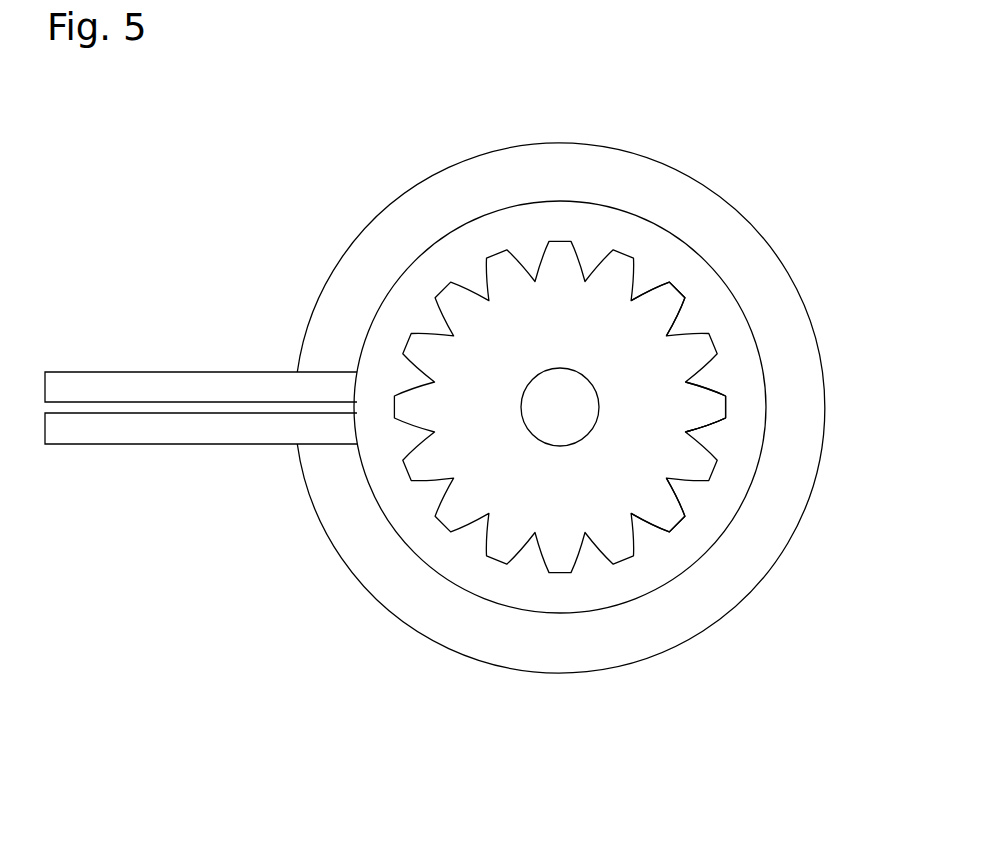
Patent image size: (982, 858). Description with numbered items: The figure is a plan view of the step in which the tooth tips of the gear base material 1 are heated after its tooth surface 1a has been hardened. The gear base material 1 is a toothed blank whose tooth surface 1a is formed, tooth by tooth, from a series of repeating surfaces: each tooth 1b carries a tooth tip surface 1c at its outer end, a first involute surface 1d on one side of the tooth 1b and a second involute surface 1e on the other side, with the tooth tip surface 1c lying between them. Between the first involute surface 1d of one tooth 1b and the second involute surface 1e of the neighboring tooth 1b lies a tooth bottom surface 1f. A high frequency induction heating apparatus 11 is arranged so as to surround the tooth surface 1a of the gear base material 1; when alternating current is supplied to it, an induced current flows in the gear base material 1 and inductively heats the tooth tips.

The gear base material 1 is at (593, 238).
The high frequency induction heating apparatus 11 is at (682, 187).
The tooth surface 1a is at (693, 305).
The tooth 1b is at (672, 518).
The tooth tip surface 1c is at (727, 407).
The first involute surface 1d is at (710, 390).
The second involute surface 1e is at (703, 432).
The tooth bottom surface 1f is at (697, 433).